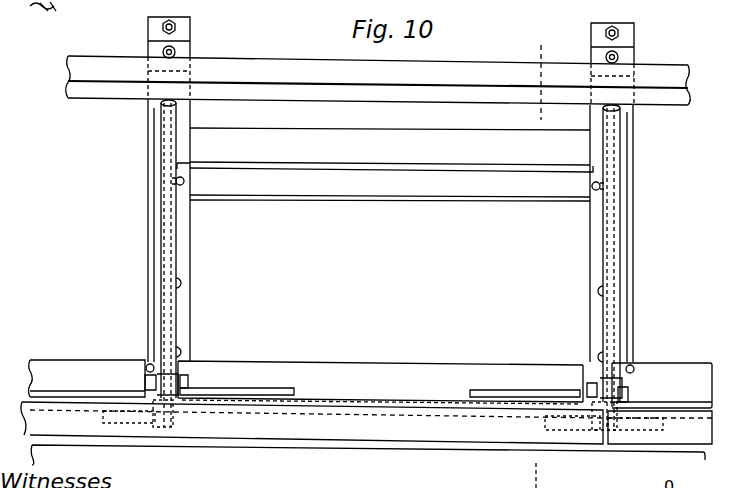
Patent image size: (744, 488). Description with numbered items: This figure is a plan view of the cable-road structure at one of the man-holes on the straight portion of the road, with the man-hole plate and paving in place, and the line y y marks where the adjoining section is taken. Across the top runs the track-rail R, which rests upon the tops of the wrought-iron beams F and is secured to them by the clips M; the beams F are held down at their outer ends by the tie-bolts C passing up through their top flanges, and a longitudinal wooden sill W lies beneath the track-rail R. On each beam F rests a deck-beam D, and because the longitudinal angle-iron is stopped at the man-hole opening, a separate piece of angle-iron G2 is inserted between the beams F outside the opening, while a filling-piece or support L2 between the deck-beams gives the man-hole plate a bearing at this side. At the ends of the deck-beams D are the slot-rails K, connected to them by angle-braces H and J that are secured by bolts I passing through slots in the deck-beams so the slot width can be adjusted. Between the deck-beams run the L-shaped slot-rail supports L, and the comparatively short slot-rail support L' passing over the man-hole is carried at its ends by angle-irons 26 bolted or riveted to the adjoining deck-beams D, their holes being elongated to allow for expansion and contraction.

The longitudinal sill W is at (60, 14).
The track-rail R is at (378, 80).
The section line y y is at (534, 73).
The iron beam F is at (192, 25).
The tie-bolt C is at (177, 13).
The clip M is at (190, 50).
The angle-iron piece G2 is at (390, 146).
The filling-piece or support L2 is at (388, 182).
The deck-beam D is at (173, 308).
The slot-rail support L is at (371, 384).
The slot-rail support adjacent to the man-hole plate L' is at (380, 381).
The angle-iron 26 is at (235, 388).
The bolt I is at (146, 372).
The angle-brace J is at (170, 380).
The slot-rail K is at (366, 437).
The angle-iron brace H is at (126, 428).